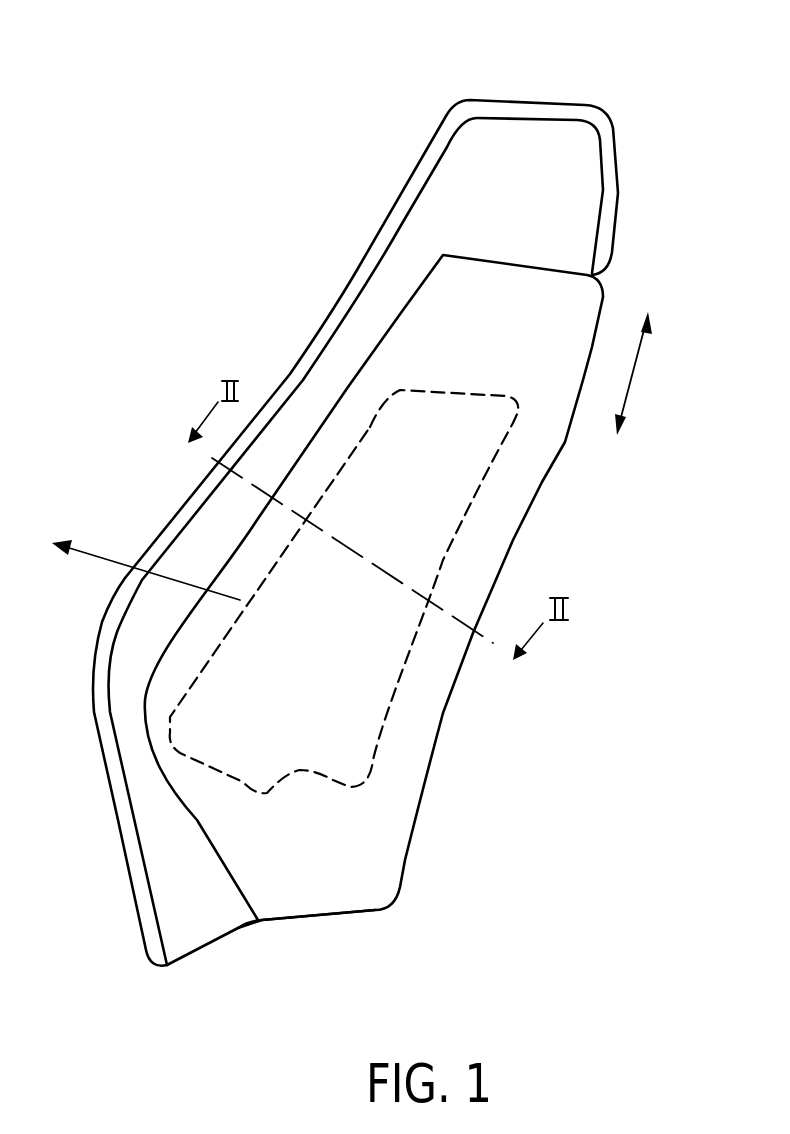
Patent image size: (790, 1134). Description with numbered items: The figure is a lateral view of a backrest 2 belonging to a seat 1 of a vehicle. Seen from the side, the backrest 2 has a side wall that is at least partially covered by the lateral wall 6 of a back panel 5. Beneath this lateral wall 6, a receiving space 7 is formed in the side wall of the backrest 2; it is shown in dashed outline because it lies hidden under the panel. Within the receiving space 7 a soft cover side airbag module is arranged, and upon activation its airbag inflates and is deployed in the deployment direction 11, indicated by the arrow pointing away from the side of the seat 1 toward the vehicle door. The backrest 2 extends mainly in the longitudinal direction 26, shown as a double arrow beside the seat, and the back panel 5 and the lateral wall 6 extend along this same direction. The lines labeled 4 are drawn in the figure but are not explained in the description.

The seat 1 is at (432, 84).
The backrest 2 is at (355, 533).
The backrest frame 4 is at (190, 503).
The back panel 5 is at (446, 715).
The lateral wall 6 is at (360, 855).
The receiving space 7 is at (467, 470).
The deployment direction 11 is at (93, 558).
The longitudinal direction 26 is at (632, 378).